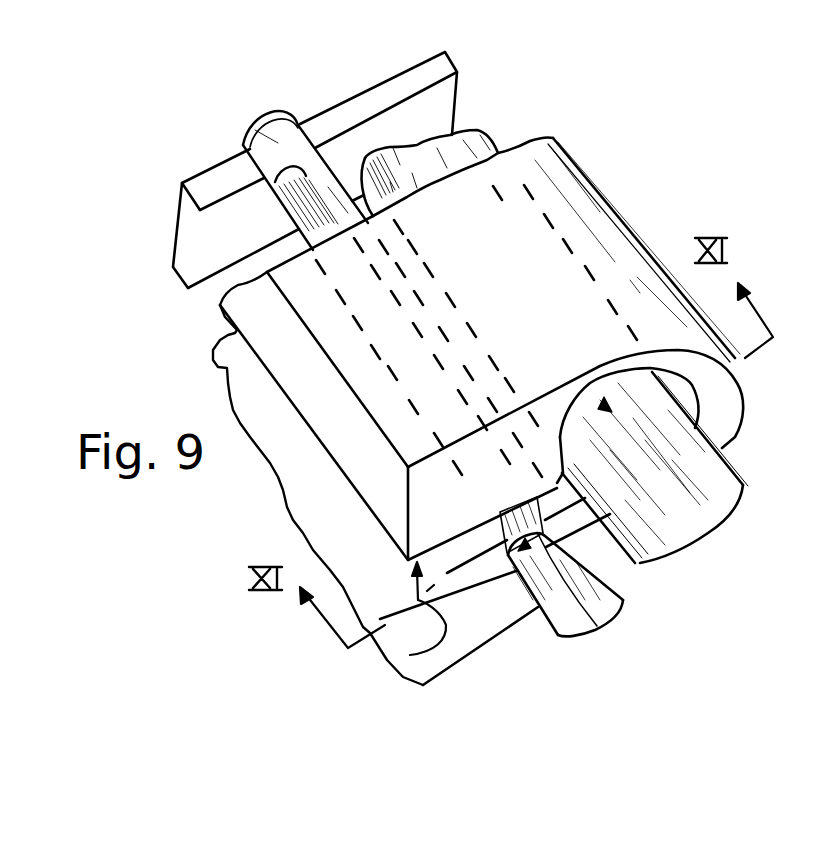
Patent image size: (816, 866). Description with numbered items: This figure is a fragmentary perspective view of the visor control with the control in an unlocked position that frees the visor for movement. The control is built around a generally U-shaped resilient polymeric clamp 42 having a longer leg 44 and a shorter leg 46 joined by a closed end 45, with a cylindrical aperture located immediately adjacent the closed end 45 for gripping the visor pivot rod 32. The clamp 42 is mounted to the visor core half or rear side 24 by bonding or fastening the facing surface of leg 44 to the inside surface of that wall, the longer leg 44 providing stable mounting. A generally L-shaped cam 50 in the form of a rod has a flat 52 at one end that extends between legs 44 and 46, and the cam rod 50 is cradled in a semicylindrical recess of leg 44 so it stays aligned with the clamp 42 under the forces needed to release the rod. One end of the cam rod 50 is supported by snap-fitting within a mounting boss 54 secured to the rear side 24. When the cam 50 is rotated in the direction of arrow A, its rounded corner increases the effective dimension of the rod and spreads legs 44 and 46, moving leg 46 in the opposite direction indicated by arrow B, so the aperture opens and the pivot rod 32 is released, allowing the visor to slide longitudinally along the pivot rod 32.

The visor core half or rear side 24 is at (232, 367).
The pivot rod 32 is at (738, 465).
The clamp 42 is at (498, 195).
The leg 44 is at (480, 643).
The closed end 45 is at (610, 207).
The leg 46 is at (343, 453).
The cam 50 is at (543, 629).
The flat 52 is at (306, 190).
The mounting boss 54 is at (453, 63).
The arrow A is at (625, 605).
The arrow B is at (403, 660).